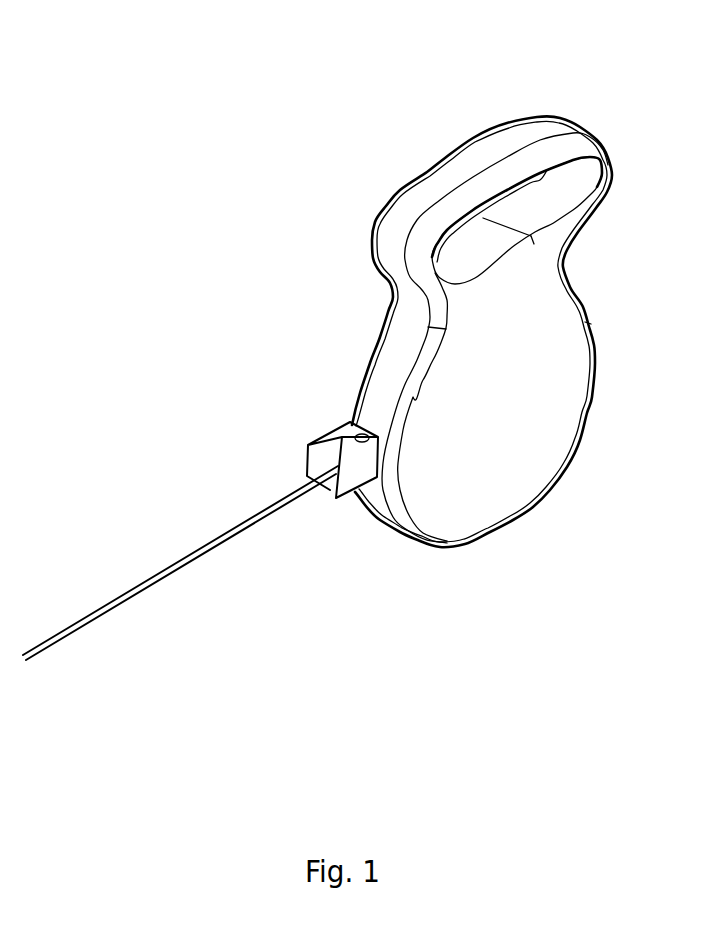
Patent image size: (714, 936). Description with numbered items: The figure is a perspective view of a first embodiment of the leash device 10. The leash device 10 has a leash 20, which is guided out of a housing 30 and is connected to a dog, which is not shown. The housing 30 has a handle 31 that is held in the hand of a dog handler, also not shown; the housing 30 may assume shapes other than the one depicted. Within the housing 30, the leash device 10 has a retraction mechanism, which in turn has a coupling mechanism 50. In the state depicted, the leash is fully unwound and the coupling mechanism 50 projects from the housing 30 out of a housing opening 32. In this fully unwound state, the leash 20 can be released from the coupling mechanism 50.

The leash device 10 is at (248, 58).
The leash 20 is at (163, 563).
The housing 30 is at (485, 488).
The handle 31 is at (480, 152).
The housing opening 32 is at (365, 427).
The coupling mechanism 50 is at (322, 450).